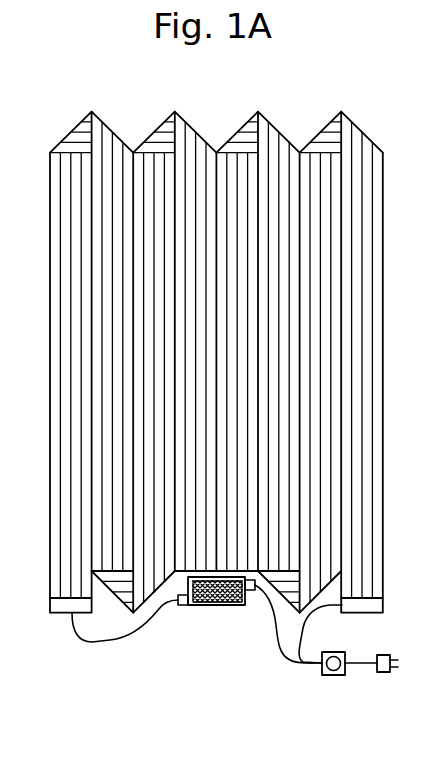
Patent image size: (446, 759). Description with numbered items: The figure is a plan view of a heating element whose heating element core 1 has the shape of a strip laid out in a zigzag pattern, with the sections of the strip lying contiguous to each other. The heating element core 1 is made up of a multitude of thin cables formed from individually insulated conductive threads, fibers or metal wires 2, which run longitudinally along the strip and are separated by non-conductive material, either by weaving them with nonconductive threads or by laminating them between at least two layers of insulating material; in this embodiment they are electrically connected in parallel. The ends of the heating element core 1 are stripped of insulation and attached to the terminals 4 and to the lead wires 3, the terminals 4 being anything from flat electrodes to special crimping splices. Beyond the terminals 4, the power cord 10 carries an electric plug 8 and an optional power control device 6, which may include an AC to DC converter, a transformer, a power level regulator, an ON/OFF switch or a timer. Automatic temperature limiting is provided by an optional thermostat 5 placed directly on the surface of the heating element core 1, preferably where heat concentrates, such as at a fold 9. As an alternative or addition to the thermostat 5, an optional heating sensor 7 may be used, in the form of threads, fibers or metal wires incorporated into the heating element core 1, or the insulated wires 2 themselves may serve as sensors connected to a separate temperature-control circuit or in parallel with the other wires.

The heating element core 1 is at (384, 232).
The individually insulated conductive threads/fibers or metal wires 2 is at (160, 165).
The lead wires 3 is at (110, 642).
The terminals 4 is at (55, 613).
The thermostat 5 is at (217, 606).
The power control device 6 is at (322, 676).
The heating sensor 7 is at (53, 171).
The electric plug 8 is at (386, 673).
The fold 9 is at (368, 137).
The power cord 10 is at (357, 665).